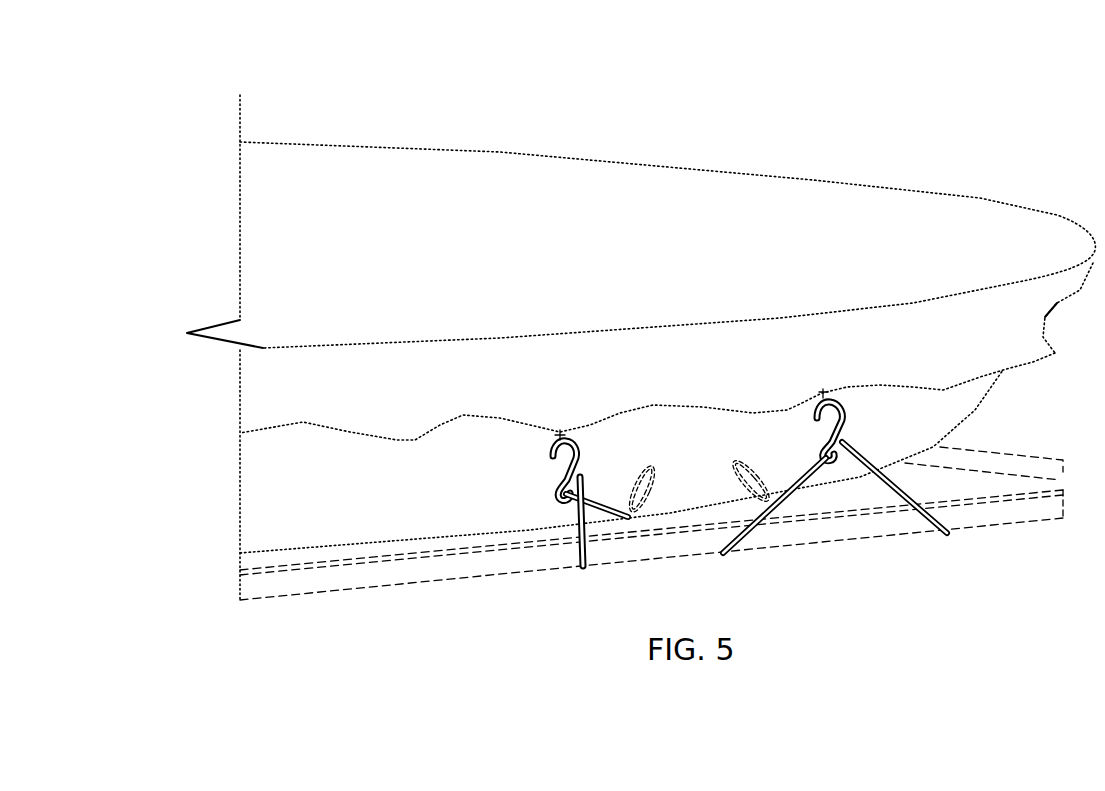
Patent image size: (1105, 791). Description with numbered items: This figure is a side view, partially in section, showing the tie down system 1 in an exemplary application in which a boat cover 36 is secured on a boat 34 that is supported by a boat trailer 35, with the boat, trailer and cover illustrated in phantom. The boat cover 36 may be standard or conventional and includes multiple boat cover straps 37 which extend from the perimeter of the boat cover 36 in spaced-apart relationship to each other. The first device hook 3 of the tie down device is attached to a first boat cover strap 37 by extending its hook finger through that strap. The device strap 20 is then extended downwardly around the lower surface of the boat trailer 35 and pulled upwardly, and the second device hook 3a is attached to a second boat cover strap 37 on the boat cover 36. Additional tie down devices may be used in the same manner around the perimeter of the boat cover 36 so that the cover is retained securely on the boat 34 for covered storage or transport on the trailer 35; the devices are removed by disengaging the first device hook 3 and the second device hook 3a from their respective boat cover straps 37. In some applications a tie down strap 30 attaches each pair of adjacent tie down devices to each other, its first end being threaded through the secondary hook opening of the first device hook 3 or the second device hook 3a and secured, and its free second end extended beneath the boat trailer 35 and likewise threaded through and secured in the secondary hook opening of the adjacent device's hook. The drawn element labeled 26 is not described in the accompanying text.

The tie down system 1 is at (698, 443).
The first device hook 3 is at (552, 486).
The second device hook 3a is at (858, 420).
The device strap 20 is at (818, 495).
The elastic loops 26 is at (737, 473).
The tie down strap 30 is at (577, 553).
The boat 34 is at (982, 407).
The boat trailer 35 is at (457, 568).
The boat cover 36 is at (415, 441).
The boat cover straps 37 is at (558, 438).